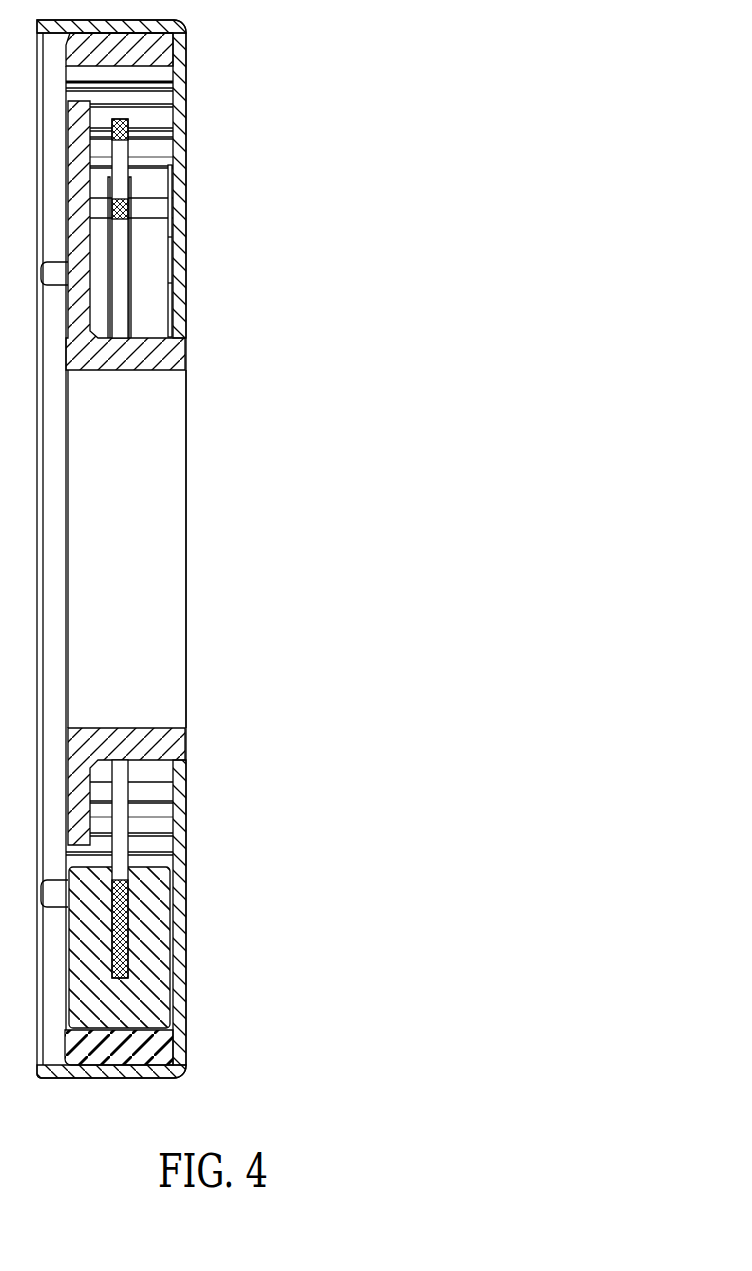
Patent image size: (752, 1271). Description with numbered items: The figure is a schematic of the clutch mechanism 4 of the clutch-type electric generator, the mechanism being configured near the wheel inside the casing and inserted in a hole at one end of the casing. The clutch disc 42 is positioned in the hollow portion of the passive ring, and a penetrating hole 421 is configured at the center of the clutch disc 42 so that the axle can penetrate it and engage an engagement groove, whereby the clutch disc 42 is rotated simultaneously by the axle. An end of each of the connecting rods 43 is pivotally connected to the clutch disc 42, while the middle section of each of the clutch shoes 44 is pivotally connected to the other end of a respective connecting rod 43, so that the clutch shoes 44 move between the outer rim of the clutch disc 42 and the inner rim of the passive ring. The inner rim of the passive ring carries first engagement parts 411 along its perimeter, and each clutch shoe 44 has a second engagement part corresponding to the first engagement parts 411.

The clutch mechanism 4 is at (402, 64).
The first engagement parts 411 is at (162, 54).
The clutch disc 42 is at (177, 360).
The penetrating hole 421 is at (157, 555).
The connecting rods 43 is at (120, 833).
The clutch shoes 44 is at (147, 958).